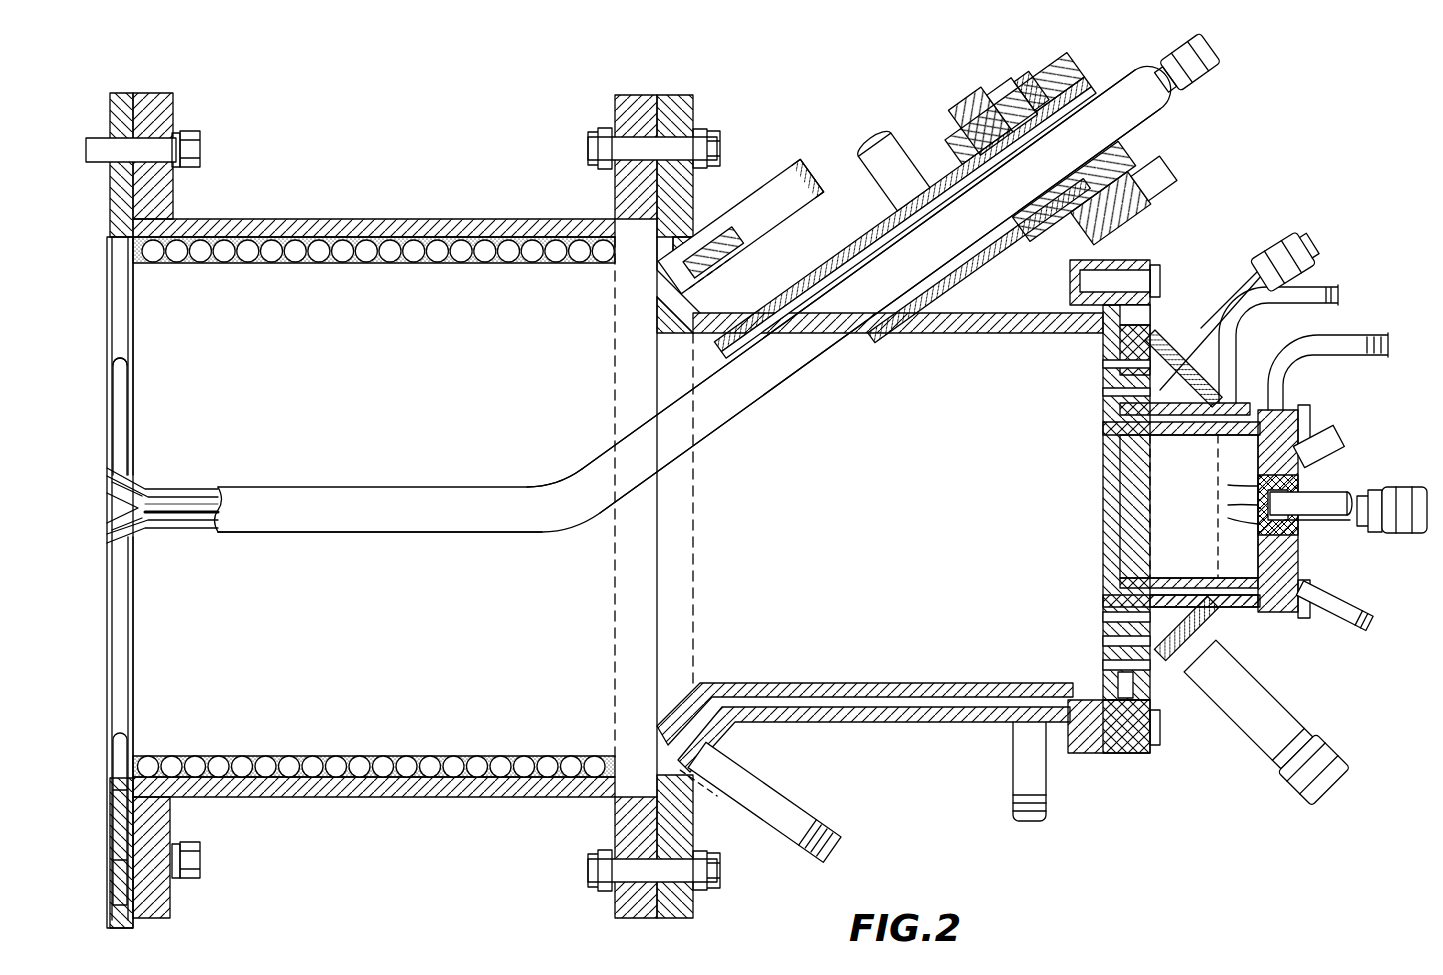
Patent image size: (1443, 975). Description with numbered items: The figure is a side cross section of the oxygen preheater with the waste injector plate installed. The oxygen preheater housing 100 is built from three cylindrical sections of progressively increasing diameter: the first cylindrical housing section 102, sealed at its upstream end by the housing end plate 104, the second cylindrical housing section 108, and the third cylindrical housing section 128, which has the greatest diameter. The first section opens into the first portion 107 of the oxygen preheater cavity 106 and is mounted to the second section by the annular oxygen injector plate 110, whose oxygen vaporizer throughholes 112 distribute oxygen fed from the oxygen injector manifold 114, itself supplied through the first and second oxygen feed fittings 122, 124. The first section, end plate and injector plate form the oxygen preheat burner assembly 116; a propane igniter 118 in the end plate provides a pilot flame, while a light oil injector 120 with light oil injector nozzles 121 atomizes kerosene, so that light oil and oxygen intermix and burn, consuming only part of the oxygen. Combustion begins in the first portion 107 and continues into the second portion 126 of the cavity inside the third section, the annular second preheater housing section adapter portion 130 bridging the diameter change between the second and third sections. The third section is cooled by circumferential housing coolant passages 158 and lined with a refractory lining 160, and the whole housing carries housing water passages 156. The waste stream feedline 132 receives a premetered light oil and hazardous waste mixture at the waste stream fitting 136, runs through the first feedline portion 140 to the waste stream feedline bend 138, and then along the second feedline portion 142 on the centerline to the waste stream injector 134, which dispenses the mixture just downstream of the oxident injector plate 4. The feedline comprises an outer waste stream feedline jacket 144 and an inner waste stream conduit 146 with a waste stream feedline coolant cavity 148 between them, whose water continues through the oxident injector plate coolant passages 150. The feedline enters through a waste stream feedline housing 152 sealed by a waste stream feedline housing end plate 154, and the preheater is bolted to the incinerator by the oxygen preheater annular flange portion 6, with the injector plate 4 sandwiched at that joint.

The oxident injector plate 4 is at (128, 392).
The oxygen preheater annular flange portion 6 is at (178, 93).
The oxygen preheater housing 100 is at (560, 825).
The first cylindrical housing section 102 is at (1238, 620).
The housing end plate 104 is at (1305, 548).
The oxygen preheater cavity 106 is at (655, 578).
The first portion of oxygen preheater cavity 107 is at (888, 637).
The second cylindrical housing section 108 is at (958, 725).
The annular oxygen injector plate 110 is at (1103, 410).
The oxygen vaporizer throughholes 112 is at (1103, 662).
The oxygen injector manifold 114 is at (1178, 345).
The oxygen preheat burner assembly 116 is at (1160, 553).
The propane igniter 118 is at (1360, 622).
The light oil injector 120 is at (1330, 492).
The light oil injector nozzles 121 is at (1215, 504).
The first oxygen feed fitting 122 is at (1305, 265).
The second oxygen feed fitting 124 is at (1348, 754).
The second portion of oxygen preheater cavity 126 is at (385, 404).
The third cylindrical housing section 128 is at (418, 797).
The second preheater housing section adapter portion 130 is at (732, 734).
The waste stream feedline 132 is at (432, 533).
The waste stream injector 134 is at (115, 488).
The waste stream fitting 136 is at (1210, 78).
The waste stream feedline bend 138 is at (540, 487).
The first feedline portion 140 is at (800, 368).
The second feedline portion 142 is at (330, 487).
The outer waste stream feedline jacket 144 is at (918, 170).
The inner waste stream conduit 146 is at (910, 192).
The waste stream feedline coolant cavity 148 is at (1113, 92).
The oxident injector plate coolant passages 150 is at (125, 432).
The waste stream feedline housing 152 is at (805, 225).
The waste stream feedline housing end plate 154 is at (1125, 162).
The housing water passages 156 is at (893, 700).
The circumferential housing coolant passages 158 is at (332, 770).
The refractory lining 160 is at (368, 263).